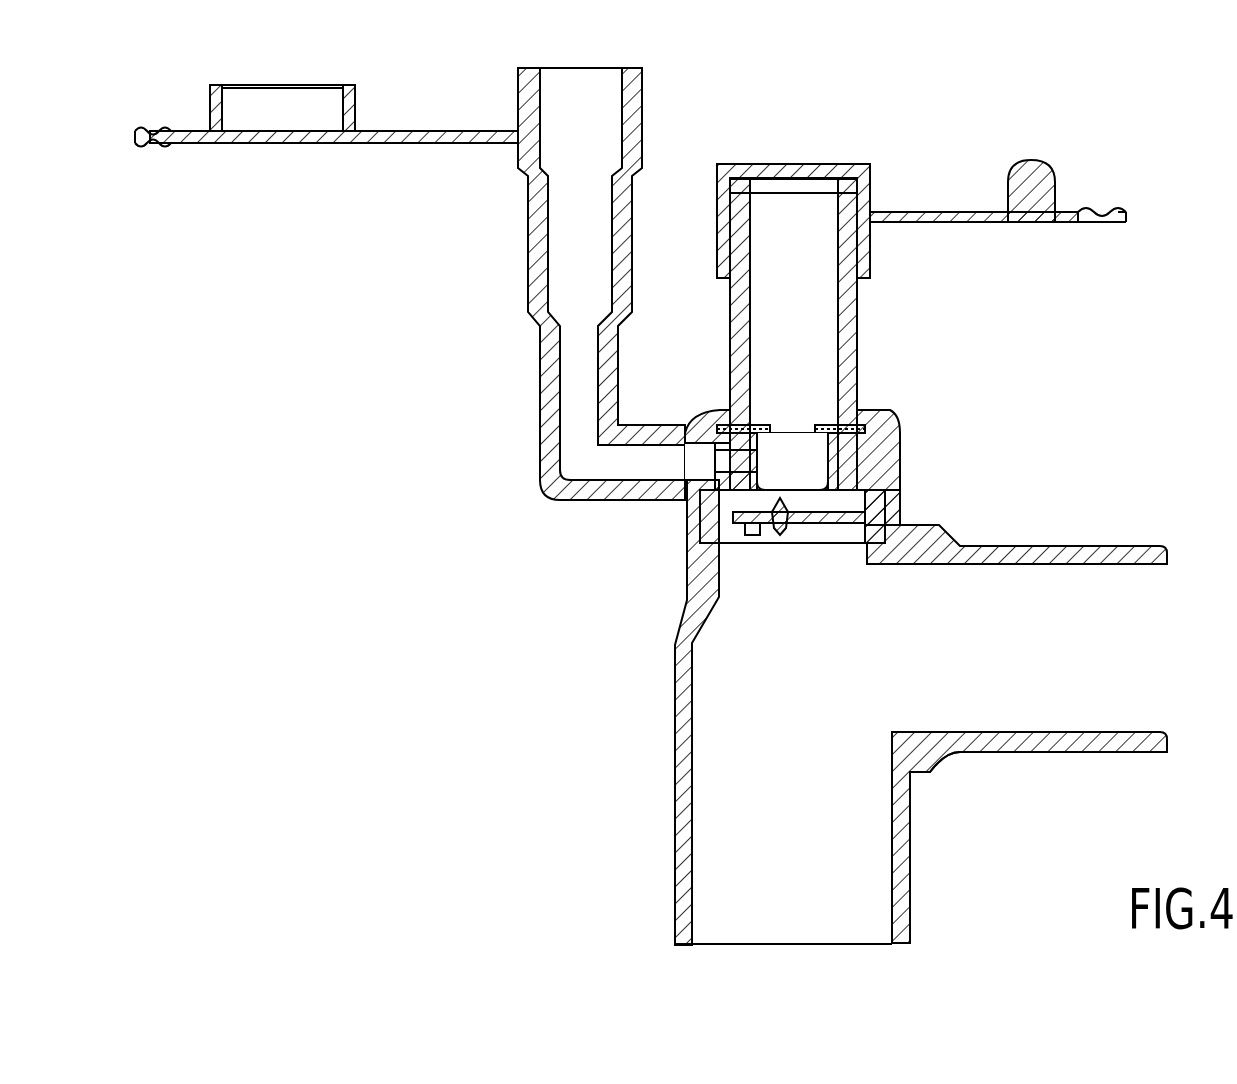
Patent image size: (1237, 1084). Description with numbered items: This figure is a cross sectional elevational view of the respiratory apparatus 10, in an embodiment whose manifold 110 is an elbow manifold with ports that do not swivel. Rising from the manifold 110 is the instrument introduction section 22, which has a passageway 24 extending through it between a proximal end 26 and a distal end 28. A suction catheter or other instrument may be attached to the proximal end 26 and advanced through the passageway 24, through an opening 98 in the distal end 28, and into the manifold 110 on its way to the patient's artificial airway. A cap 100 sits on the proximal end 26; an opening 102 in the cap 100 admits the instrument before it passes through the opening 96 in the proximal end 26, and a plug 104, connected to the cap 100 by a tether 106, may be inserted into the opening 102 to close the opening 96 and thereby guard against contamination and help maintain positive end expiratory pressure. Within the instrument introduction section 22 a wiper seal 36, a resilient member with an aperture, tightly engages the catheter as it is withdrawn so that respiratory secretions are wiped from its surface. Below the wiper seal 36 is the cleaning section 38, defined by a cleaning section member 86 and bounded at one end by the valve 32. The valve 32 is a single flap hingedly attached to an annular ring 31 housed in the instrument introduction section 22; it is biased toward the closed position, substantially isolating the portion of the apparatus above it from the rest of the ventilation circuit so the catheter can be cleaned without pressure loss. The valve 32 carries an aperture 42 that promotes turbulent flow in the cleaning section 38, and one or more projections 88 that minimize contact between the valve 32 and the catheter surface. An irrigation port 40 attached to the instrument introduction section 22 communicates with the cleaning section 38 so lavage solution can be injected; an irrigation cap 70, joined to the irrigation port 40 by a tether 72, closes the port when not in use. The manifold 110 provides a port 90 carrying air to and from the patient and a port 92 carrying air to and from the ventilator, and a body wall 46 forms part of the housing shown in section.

The respiratory apparatus 10 is at (1145, 341).
The instrument introduction section 22 is at (802, 455).
The passageway 24 is at (805, 345).
The proximal end 26 is at (851, 297).
The distal end 28 is at (880, 522).
The annular ring 31 is at (706, 525).
The valve 32 is at (838, 528).
The wiper seal 36 is at (758, 418).
The cleaning section 38 is at (832, 428).
The irrigation port 40 is at (528, 293).
The aperture 42 is at (797, 528).
The body side wall 46 is at (694, 573).
The irrigation cap 70 is at (277, 147).
The tether 72 is at (407, 146).
The cleaning section member 86 is at (742, 440).
The projection 88 is at (777, 535).
The port 90 is at (680, 918).
The port 92 is at (1132, 545).
The opening 96 is at (787, 196).
The opening 98 is at (742, 548).
The cap 100 is at (723, 205).
The opening 102 is at (795, 165).
The plug 104 is at (1036, 166).
The tether 106 is at (925, 211).
The manifold 110 is at (931, 765).